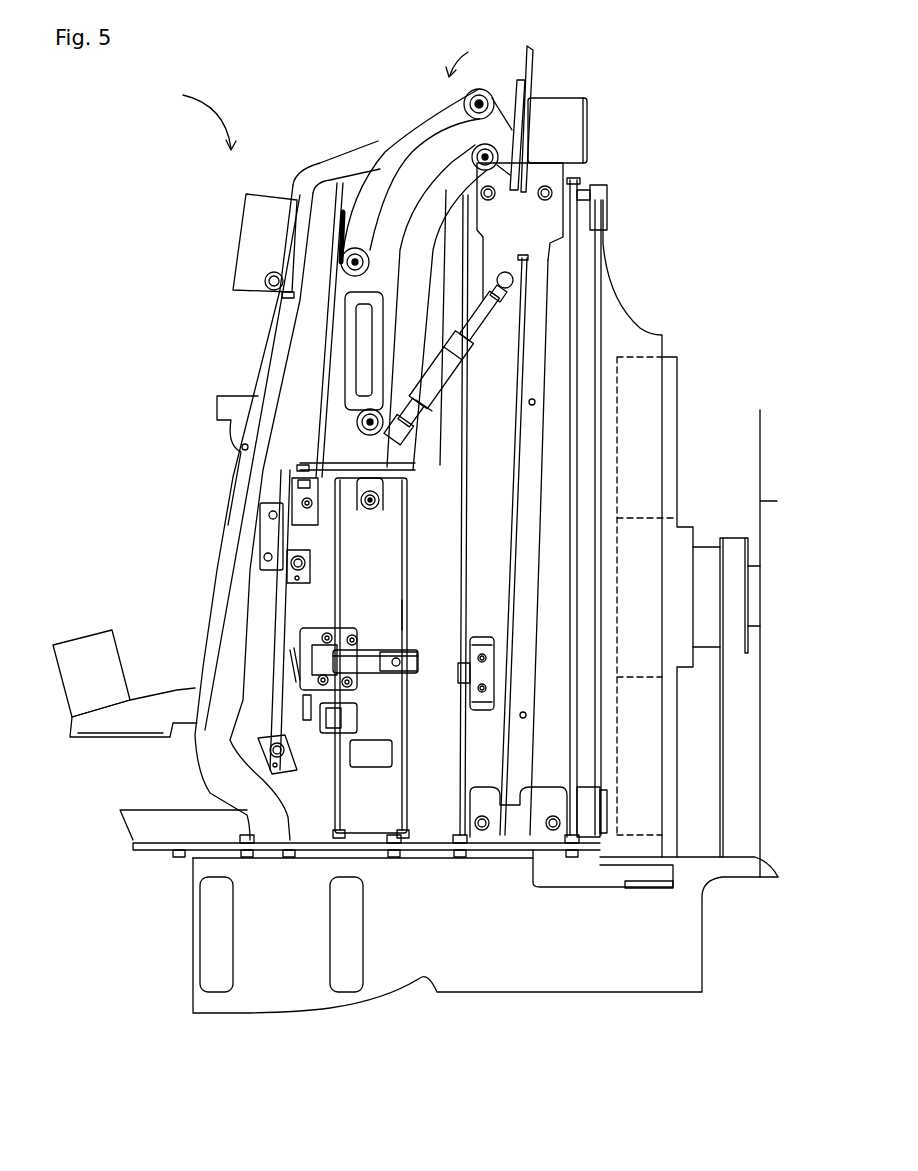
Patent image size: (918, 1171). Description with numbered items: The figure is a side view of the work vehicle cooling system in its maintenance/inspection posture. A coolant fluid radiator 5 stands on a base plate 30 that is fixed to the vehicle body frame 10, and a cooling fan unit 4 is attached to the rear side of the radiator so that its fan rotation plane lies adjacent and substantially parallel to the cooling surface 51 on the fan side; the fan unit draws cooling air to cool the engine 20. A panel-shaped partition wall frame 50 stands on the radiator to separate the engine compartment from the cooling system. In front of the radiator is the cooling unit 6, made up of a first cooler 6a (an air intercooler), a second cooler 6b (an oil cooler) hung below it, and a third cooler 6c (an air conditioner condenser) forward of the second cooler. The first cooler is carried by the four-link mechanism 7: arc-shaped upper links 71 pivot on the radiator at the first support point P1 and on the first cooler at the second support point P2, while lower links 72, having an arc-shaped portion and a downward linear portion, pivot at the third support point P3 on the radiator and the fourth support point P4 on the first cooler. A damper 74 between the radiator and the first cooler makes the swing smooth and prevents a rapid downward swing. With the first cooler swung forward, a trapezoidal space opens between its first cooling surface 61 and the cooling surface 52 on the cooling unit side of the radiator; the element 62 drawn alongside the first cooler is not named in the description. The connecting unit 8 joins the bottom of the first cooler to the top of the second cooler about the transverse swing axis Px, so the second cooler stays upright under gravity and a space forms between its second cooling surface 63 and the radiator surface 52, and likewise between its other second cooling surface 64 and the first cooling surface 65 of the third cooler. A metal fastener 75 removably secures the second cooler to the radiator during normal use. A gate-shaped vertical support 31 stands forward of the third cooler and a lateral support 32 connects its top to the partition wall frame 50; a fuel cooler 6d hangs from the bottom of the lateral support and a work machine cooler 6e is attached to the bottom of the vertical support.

The cooling fan unit 4 is at (629, 311).
The coolant fluid radiator 5 is at (562, 302).
The cooling unit 6 is at (199, 118).
The first cooler 6a is at (417, 432).
The second cooler 6b is at (398, 560).
The third cooler 6c is at (285, 782).
The fuel cooler 6d is at (244, 212).
The work machine cooler 6e is at (78, 640).
The link mechanism 7 is at (465, 51).
The connecting unit 8 is at (362, 453).
The vehicle body frame 10 is at (193, 880).
The engine 20 is at (760, 410).
The base plate 30 is at (140, 848).
The vertical support 31 is at (220, 566).
The lateral support 32 is at (315, 168).
The partition wall frame 50 is at (506, 752).
The cooling surface on fan side 51 is at (580, 362).
The cooling surface on cooling unit side 52 is at (457, 745).
The first cooling surface 61 is at (435, 297).
The support strip 62 is at (340, 325).
The second cooling surface of second cooler 63 is at (410, 612).
The second cooling surface of second cooler 64 is at (330, 770).
The first cooling surface of third cooler 65 is at (308, 707).
The upper links 71 is at (417, 127).
The lower links 72 is at (413, 217).
The damper 74 is at (461, 340).
The metal fastener 75 is at (361, 681).
The first support point P1 is at (483, 95).
The second support point P2 is at (347, 262).
The third support point P3 is at (492, 160).
The fourth support point P4 is at (380, 412).
The swing axis Px is at (372, 512).